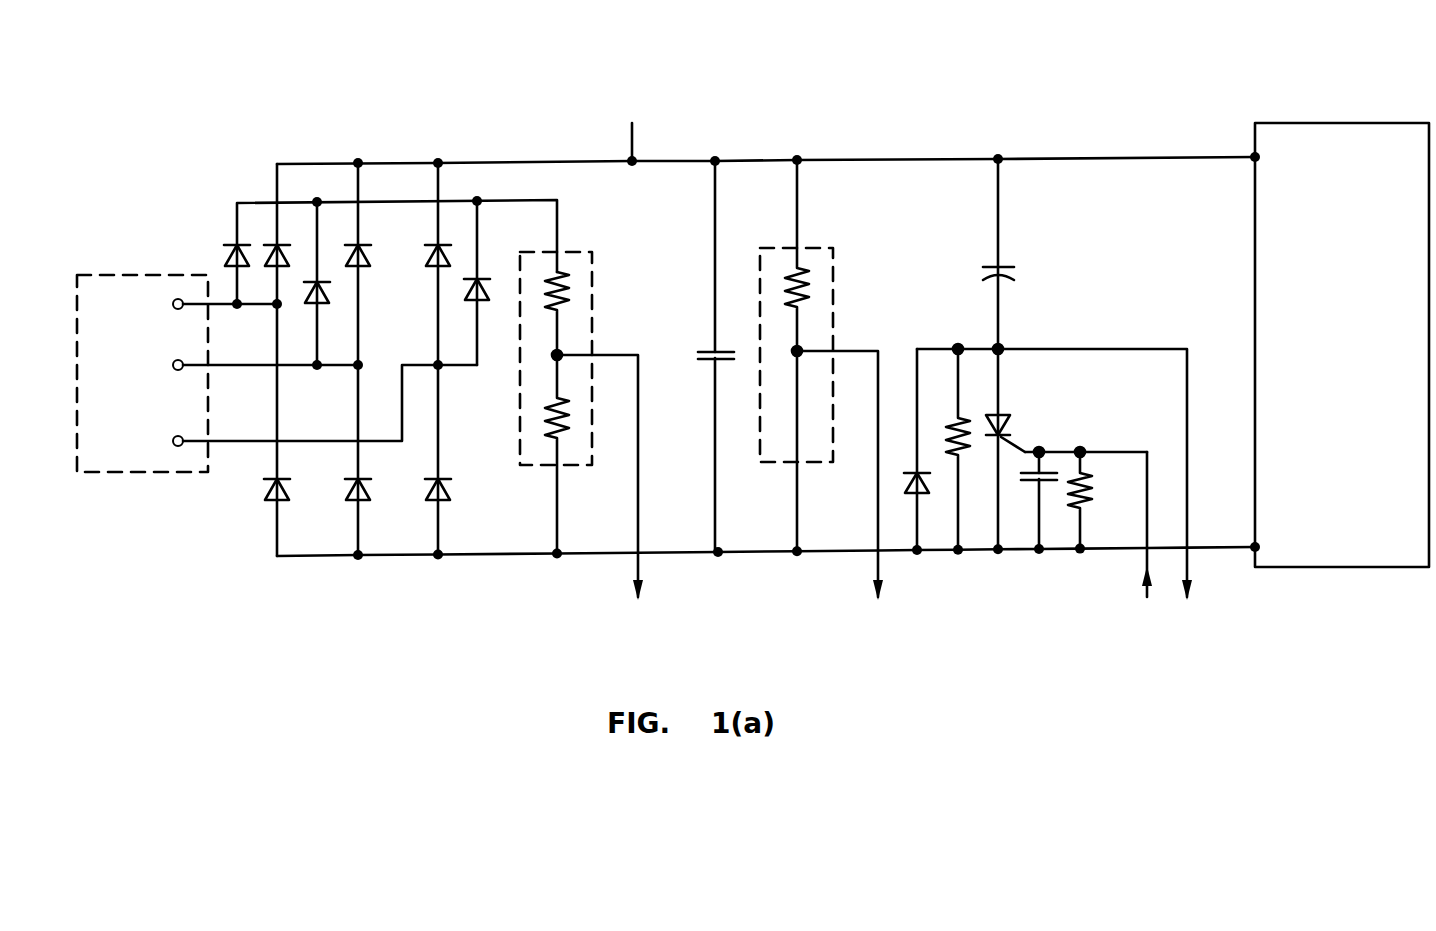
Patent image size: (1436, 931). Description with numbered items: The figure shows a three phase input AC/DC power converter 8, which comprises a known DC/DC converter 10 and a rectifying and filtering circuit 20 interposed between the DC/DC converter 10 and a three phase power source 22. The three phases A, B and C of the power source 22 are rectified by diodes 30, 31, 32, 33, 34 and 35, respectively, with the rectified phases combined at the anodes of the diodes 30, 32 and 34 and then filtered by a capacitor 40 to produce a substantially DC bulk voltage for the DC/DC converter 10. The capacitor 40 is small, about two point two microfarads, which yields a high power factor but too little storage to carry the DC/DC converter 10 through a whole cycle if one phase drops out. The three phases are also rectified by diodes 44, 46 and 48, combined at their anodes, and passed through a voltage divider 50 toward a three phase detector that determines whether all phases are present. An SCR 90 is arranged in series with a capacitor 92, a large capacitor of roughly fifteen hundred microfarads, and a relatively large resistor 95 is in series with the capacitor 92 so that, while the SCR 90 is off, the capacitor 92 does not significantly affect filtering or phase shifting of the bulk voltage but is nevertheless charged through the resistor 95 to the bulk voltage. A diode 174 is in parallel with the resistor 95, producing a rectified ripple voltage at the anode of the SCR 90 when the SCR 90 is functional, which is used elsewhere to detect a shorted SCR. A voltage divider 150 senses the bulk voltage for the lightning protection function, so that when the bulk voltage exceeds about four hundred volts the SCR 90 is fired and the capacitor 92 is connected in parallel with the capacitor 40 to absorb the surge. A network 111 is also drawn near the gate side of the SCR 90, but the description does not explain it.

The three phase input AC/DC power converter 8 is at (1153, 672).
The DC/DC converter 10 is at (1340, 185).
The rectifying and filtering circuit 20 is at (1135, 122).
The three phase power source 22 is at (170, 275).
The diode 30 is at (274, 243).
The diode 31 is at (275, 502).
The diode 32 is at (360, 268).
The diode 33 is at (356, 502).
The diode 34 is at (445, 241).
The diode 35 is at (441, 502).
The capacitor 40 is at (698, 352).
The diode 44 is at (234, 243).
The diode 46 is at (320, 305).
The diode 48 is at (479, 277).
The voltage divider 50 is at (594, 294).
The SCR 90 is at (1006, 414).
The capacitor 92 is at (993, 263).
The resistor 95 is at (950, 420).
The RC network 111 is at (1027, 449).
The voltage divider 150 is at (833, 296).
The diode 174 is at (920, 497).